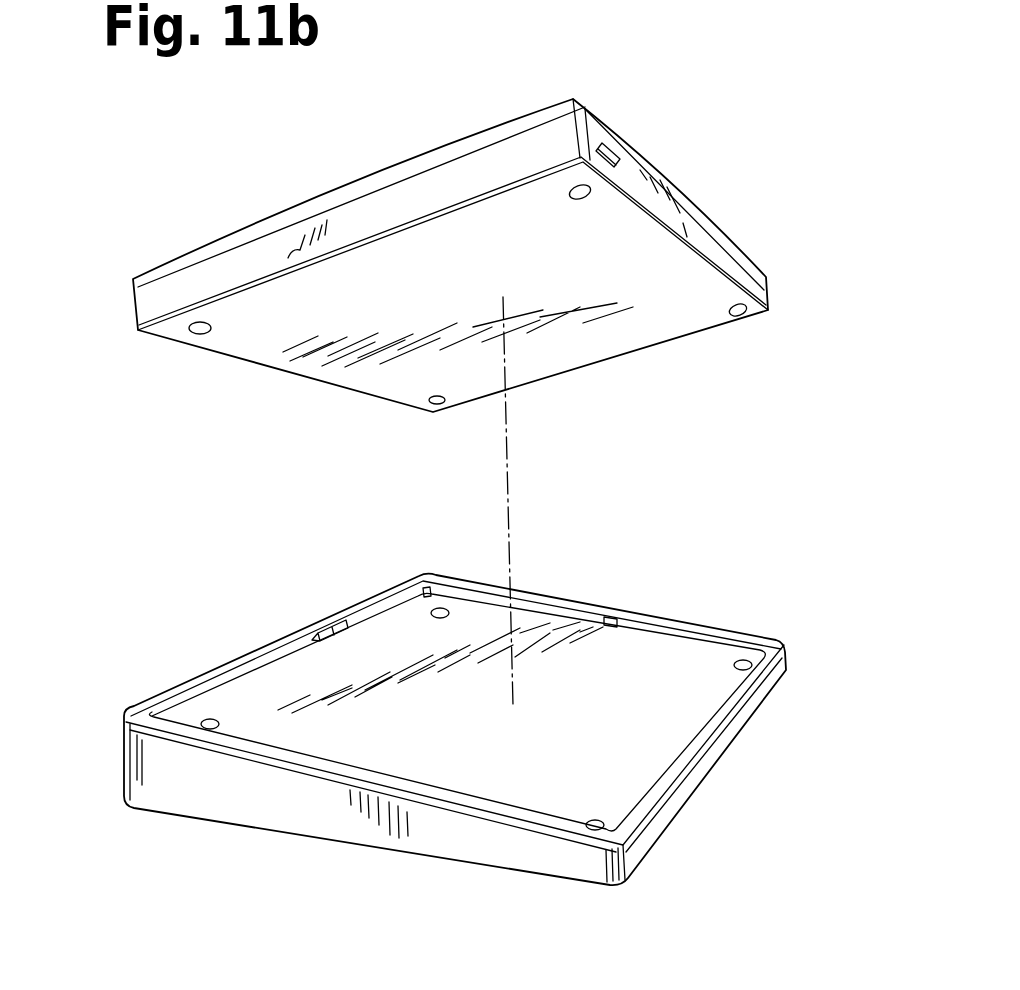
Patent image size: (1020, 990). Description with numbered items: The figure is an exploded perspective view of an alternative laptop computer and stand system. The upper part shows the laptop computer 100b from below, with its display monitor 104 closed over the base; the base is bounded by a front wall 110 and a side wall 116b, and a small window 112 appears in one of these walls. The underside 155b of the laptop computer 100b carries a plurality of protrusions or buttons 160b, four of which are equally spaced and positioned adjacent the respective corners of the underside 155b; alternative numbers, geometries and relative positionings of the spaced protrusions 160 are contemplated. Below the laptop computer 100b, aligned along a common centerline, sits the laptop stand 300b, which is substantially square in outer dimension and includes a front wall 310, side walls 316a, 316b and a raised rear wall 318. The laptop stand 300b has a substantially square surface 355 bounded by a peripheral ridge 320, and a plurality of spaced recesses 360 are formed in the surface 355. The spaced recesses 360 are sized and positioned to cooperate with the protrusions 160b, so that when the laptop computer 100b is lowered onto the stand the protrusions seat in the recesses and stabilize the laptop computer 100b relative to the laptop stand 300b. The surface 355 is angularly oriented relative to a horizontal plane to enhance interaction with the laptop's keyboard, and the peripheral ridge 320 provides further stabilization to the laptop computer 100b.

The laptop computer 100b is at (495, 247).
The display monitor 104 is at (423, 165).
The side wall 116b is at (485, 165).
The front wall 110 is at (712, 245).
The latch window 112 is at (610, 153).
The spaced protrusions 160 is at (735, 318).
The protrusions or buttons 160b is at (198, 334).
The underside 155b is at (495, 288).
The laptop stand 300b is at (456, 723).
The front wall 310 is at (660, 823).
The side wall 316a is at (625, 606).
The side wall 316b is at (323, 822).
The raised rear wall 318 is at (120, 742).
The peripheral ridge 320 is at (314, 638).
The surface 355 is at (460, 740).
The spaced recesses 360 is at (746, 658).